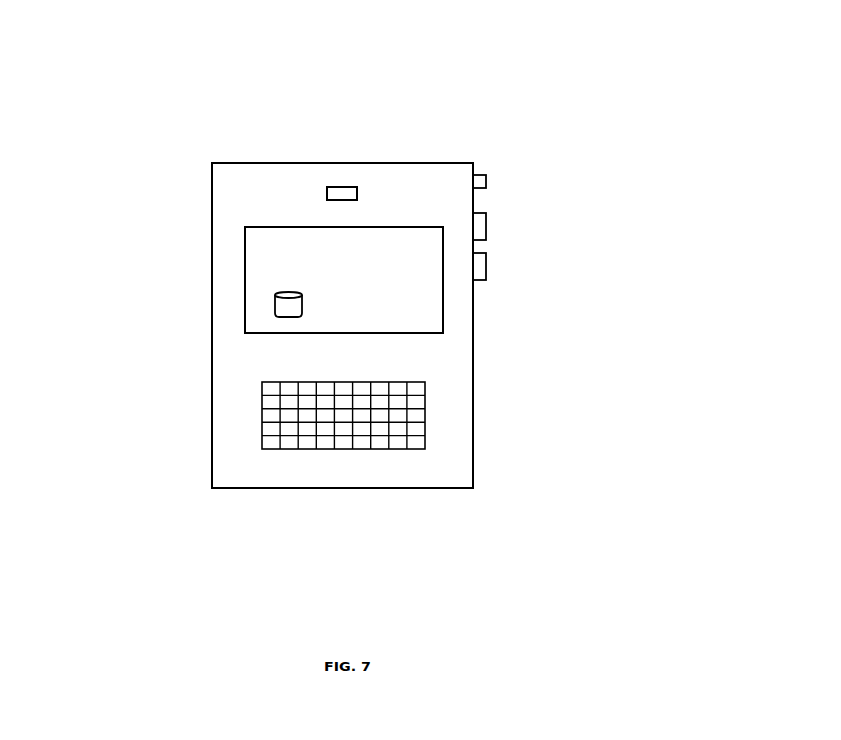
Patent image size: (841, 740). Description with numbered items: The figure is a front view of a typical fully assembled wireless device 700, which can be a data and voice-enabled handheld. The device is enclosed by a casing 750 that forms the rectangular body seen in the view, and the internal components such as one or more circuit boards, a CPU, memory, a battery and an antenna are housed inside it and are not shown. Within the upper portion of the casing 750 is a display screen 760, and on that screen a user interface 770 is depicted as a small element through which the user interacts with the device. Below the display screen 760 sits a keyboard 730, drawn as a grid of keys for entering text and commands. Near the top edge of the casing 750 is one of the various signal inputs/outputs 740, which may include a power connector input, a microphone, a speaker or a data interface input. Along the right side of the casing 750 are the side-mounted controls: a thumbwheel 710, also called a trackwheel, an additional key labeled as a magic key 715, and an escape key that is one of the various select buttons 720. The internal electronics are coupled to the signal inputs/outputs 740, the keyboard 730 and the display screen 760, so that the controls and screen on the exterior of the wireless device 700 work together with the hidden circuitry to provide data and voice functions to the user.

The wireless device 700 is at (448, 48).
The thumbwheel 710 is at (486, 227).
The magic key 715 is at (486, 182).
The select buttons 720 is at (486, 280).
The keyboard 730 is at (360, 438).
The signal inputs/outputs 740 is at (351, 187).
The casing 750 is at (247, 193).
The display screen 760 is at (268, 271).
The user interface 770 is at (275, 317).